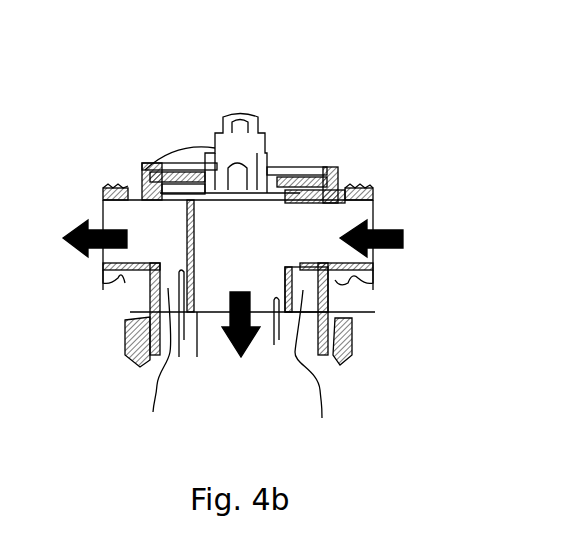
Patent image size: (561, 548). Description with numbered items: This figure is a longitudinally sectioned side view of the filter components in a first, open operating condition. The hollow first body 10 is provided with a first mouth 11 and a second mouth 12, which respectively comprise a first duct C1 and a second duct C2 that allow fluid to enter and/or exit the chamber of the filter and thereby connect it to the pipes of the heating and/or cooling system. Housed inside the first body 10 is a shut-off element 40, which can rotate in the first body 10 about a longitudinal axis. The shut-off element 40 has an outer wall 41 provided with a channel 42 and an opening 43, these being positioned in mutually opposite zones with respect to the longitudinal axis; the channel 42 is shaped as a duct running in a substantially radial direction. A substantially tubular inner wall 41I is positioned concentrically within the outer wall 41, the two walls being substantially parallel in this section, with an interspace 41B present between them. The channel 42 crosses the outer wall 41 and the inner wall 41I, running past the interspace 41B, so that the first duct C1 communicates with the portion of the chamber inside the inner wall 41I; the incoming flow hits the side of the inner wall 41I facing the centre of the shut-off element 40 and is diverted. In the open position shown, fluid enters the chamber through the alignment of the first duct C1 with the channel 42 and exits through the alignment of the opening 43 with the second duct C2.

The hollow first body 10 is at (103, 83).
The first mouth 11 is at (377, 198).
The second mouth 12 is at (103, 195).
The shut-off element 40 is at (215, 356).
The outer wall 41 is at (135, 308).
The inner wall 41I is at (188, 340).
The interspace 41B is at (241, 364).
The channel 42 is at (310, 230).
The opening 43 is at (153, 232).
The first duct C1 is at (375, 270).
The second duct C2 is at (103, 277).